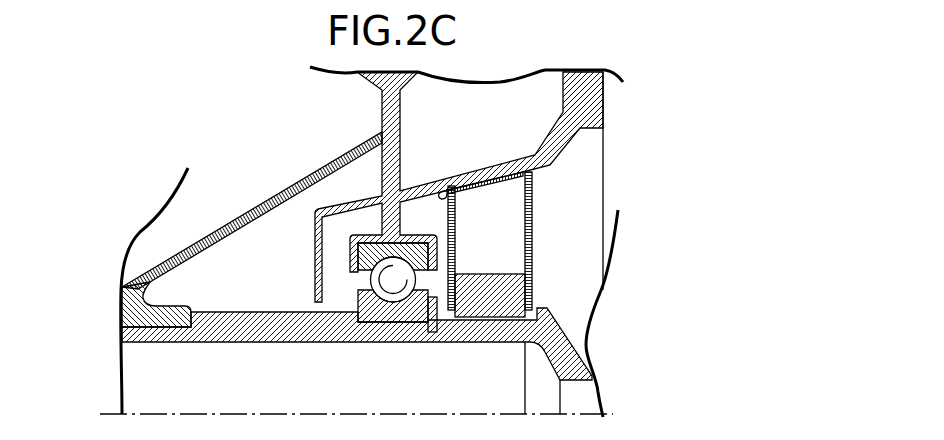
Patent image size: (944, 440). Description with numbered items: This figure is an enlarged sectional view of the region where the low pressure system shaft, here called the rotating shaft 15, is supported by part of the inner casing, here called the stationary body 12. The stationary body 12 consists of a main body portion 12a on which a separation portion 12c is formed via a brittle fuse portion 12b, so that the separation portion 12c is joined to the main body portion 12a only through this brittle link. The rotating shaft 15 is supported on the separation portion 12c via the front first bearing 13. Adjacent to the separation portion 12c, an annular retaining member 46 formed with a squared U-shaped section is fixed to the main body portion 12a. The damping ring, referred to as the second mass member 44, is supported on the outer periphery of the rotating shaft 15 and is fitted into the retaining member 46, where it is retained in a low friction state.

The stationary body 12 is at (533, 128).
The main body portion 12a is at (575, 85).
The brittle fuse portion 12b is at (448, 188).
The separation portion 12c is at (345, 198).
The front first bearing 13 is at (392, 290).
The rotating shaft 15 is at (284, 300).
The second mass member 44 is at (485, 280).
The retaining member 46 is at (533, 230).